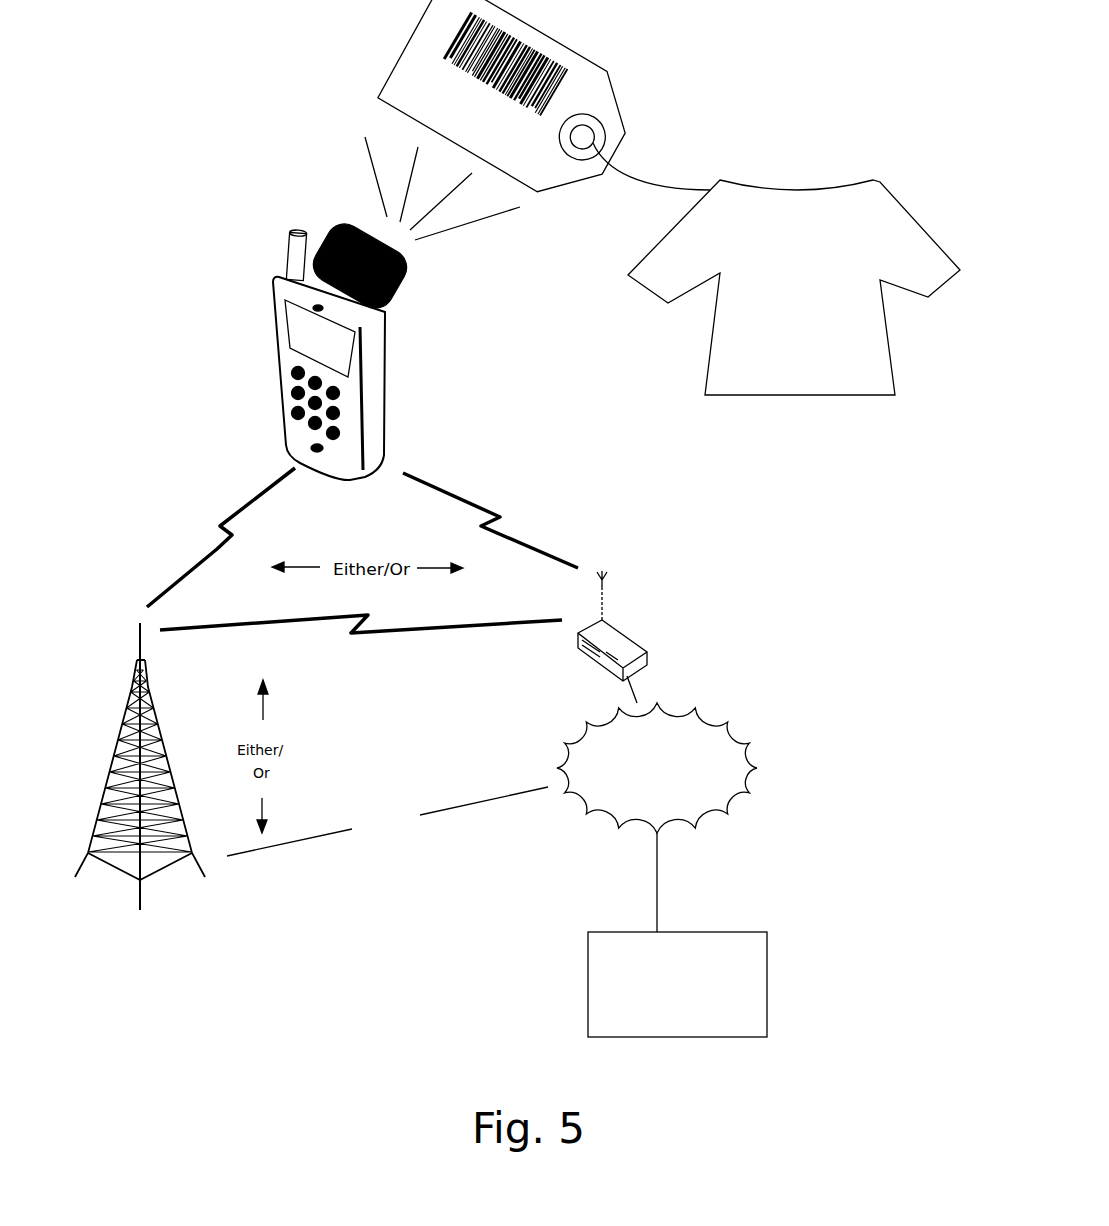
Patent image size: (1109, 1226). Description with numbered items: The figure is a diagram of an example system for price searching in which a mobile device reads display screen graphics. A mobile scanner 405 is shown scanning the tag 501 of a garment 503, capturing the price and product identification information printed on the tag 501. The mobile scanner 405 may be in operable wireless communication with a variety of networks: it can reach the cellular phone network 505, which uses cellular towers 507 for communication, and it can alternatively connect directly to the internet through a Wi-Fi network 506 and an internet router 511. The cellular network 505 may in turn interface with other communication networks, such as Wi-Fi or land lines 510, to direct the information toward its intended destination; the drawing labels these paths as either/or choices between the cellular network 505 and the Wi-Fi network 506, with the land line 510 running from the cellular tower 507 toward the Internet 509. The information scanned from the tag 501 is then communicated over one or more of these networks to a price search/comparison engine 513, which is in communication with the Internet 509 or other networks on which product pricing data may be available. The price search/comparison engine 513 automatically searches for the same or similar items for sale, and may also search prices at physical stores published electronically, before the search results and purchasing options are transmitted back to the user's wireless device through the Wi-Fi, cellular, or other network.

The mobile scanner 405 is at (275, 417).
The tag 501 is at (550, 187).
The garment 503 is at (733, 392).
The cellular phone network 505 is at (210, 538).
The Wi-Fi network 506 is at (517, 532).
The cellular tower 507 is at (120, 733).
The Internet 509 is at (580, 807).
The land line 510 is at (325, 835).
The internet router 511 is at (580, 653).
The price search/comparison engine 513 is at (675, 1037).